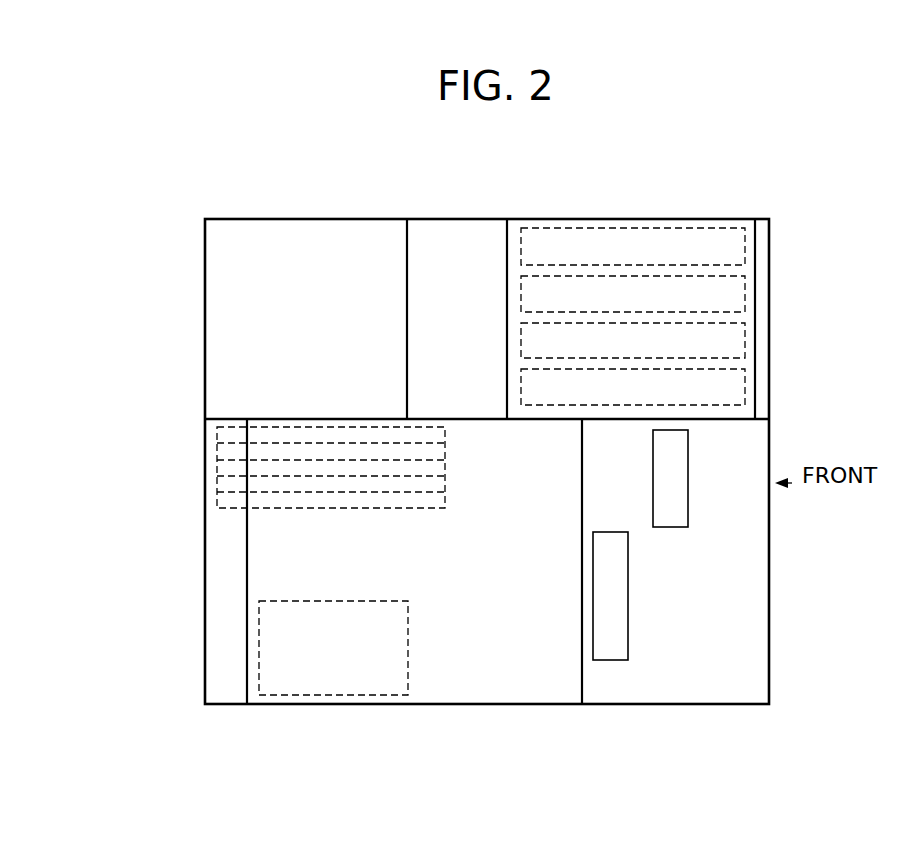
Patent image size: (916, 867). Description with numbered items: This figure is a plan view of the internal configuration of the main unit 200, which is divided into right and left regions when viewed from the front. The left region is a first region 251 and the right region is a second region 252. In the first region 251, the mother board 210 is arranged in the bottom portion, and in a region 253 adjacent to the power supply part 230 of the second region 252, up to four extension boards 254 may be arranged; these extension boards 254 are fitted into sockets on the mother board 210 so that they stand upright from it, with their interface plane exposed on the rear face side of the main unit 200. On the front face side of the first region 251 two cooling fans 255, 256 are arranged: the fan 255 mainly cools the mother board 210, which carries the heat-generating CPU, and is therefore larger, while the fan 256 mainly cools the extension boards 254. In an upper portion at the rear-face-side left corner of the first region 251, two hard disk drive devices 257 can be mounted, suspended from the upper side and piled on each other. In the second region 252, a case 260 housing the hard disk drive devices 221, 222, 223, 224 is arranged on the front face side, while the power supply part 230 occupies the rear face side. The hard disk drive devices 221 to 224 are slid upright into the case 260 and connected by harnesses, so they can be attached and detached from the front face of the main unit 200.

The main unit 200 is at (368, 205).
The mother board 210 is at (247, 686).
The hard disk drive device 221 is at (745, 383).
The hard disk drive device 222 is at (745, 336).
The hard disk drive device 223 is at (745, 291).
The hard disk drive device 224 is at (745, 243).
The power supply part 230 is at (287, 229).
The first region 251 is at (205, 605).
The second region 252 is at (204, 321).
The region 253 is at (197, 470).
The extension board 254 is at (243, 510).
The cooling fan 255 is at (613, 660).
The cooling fan 256 is at (688, 504).
The hard disk drive device 257 is at (318, 697).
The case 260 is at (506, 240).